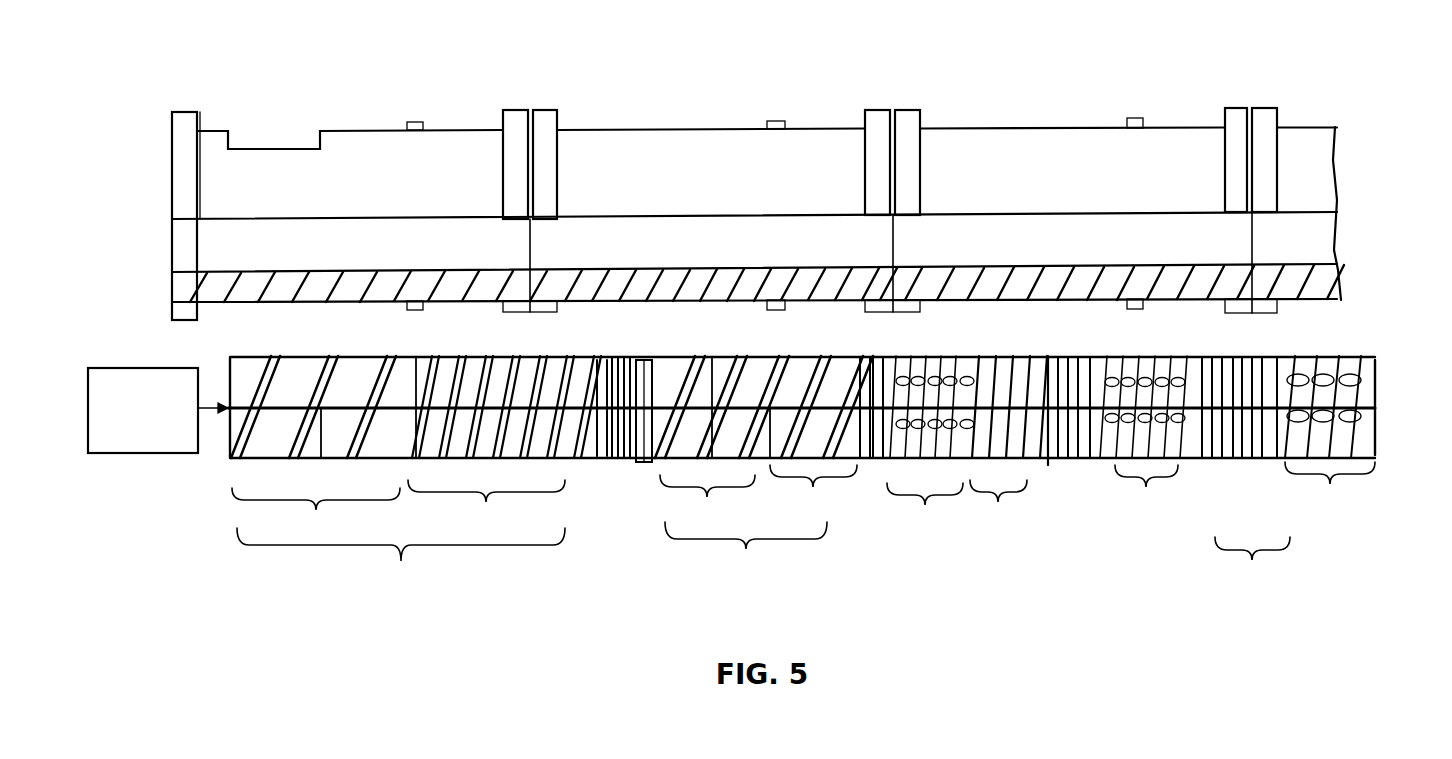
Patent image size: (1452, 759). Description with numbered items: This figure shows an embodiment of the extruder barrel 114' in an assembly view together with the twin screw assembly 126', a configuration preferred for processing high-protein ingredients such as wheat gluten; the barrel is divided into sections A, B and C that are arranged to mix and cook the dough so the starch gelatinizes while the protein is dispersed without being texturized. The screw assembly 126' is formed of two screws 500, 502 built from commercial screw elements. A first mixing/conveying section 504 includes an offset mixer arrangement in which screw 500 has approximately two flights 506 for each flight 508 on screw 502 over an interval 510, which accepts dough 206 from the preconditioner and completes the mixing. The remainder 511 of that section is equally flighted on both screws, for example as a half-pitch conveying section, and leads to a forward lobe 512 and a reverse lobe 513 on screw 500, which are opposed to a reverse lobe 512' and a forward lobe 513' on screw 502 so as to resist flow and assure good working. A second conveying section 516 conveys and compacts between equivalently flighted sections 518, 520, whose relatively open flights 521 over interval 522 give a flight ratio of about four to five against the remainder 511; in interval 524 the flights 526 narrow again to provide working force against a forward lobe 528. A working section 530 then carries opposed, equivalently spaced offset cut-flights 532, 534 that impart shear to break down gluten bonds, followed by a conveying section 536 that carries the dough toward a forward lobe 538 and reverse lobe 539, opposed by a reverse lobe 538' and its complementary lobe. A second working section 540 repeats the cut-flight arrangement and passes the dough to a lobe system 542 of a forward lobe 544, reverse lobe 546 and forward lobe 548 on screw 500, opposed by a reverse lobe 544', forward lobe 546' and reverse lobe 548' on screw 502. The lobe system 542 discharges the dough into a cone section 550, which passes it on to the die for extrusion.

The extruder barrel 114' is at (758, 168).
The screw assembly 126' is at (834, 397).
The dough 206 is at (130, 368).
The screw 500 is at (230, 360).
The screw 502 is at (229, 457).
The first mixing/conveying section 504 is at (401, 562).
The flights 506 is at (280, 372).
The flight 508 is at (265, 461).
The interval 510 is at (316, 515).
The remainder 511 is at (504, 444).
The forward lobe 512 is at (582, 386).
The reverse lobe 512' is at (596, 470).
The reverse lobe 513 is at (625, 389).
The forward lobe 513' is at (635, 470).
The second conveying section 516 is at (746, 554).
The section 518 is at (768, 358).
The section 520 is at (680, 455).
The flights 521 is at (688, 362).
The interval 522 is at (707, 500).
The interval 524 is at (821, 436).
The flights 526 is at (863, 360).
The forward lobe 528 is at (874, 357).
The working section 530 is at (925, 442).
The cut-flights 532 is at (950, 446).
The cut-flights 534 is at (940, 360).
The conveying section 536 is at (1008, 440).
The forward lobe 538 is at (1065, 391).
The reverse lobe 538' is at (1065, 497).
The reverse lobe 539 is at (1086, 358).
The second working section 540 is at (1143, 435).
The lobe system 542 is at (1252, 566).
The forward lobe 544 is at (1198, 386).
The reverse lobe 544' is at (1198, 478).
The reverse lobe 546 is at (1250, 386).
The forward lobe 546' is at (1260, 488).
The forward lobe 548 is at (1320, 351).
The reverse lobe 548' is at (1312, 460).
The cone section 550 is at (1330, 433).